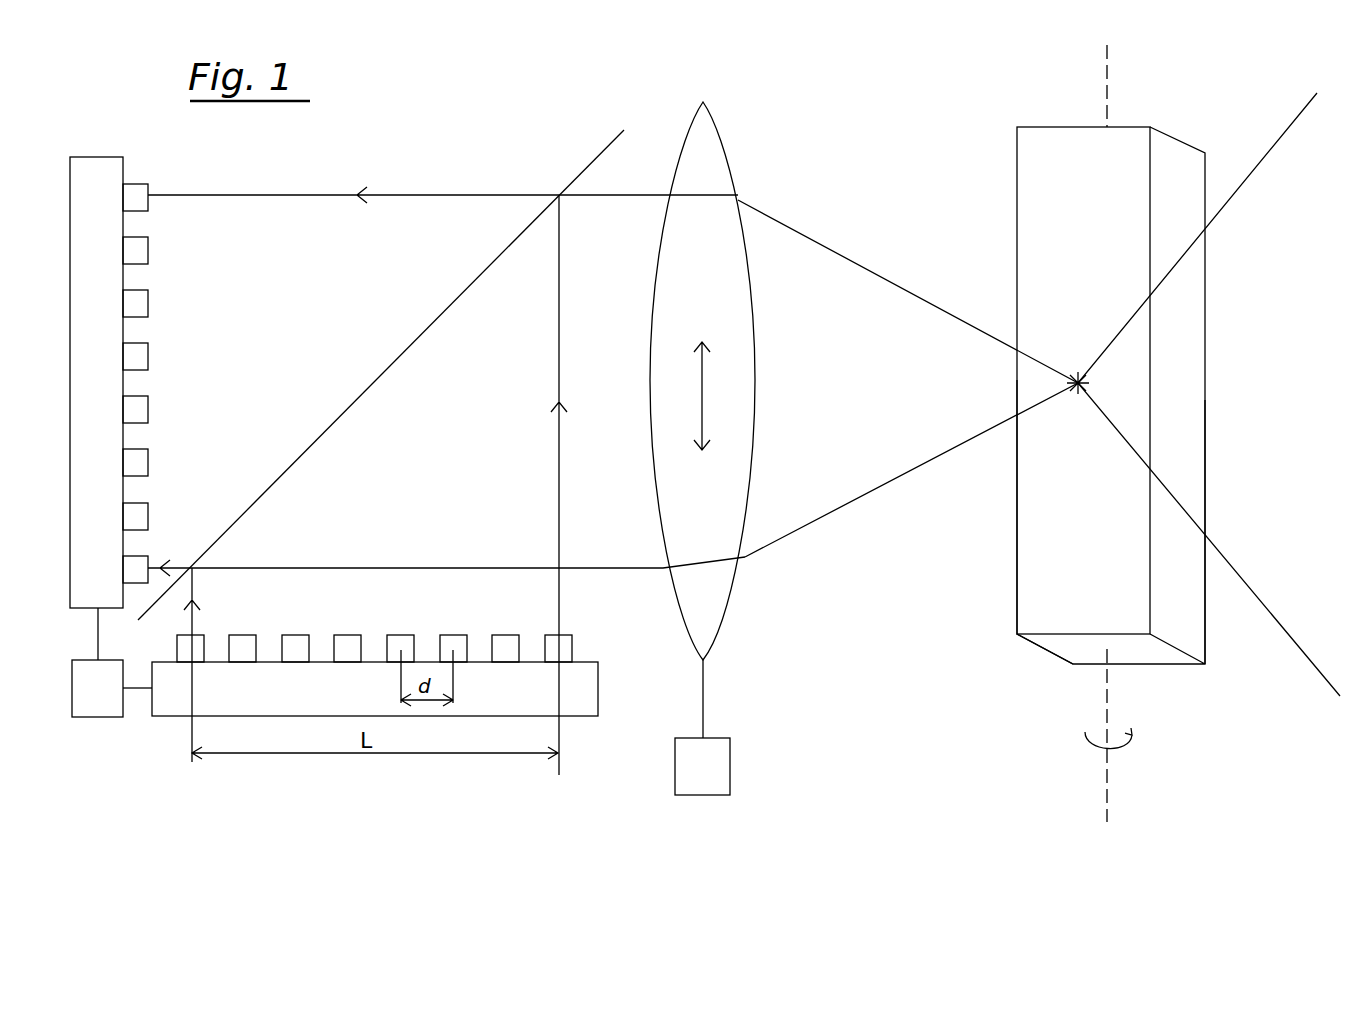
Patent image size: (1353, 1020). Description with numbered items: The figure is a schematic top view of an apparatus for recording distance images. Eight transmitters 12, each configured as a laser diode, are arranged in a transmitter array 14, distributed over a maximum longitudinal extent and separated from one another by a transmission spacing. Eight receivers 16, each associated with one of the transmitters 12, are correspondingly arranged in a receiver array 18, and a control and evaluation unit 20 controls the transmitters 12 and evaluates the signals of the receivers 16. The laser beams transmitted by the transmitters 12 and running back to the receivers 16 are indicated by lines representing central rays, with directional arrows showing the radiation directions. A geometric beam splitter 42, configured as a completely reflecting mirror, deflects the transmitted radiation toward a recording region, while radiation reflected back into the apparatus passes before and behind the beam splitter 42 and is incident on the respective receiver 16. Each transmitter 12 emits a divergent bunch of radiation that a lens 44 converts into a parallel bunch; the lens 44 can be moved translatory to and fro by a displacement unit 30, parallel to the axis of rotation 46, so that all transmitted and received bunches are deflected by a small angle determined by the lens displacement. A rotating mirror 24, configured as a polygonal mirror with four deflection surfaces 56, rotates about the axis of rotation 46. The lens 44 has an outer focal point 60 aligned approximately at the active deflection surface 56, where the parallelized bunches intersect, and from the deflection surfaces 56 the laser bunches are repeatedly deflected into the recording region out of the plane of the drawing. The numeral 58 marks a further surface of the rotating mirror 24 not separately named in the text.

The transmitter 12 is at (298, 648).
The transmitter array 14 is at (320, 705).
The receiver 16 is at (137, 300).
The receiver array 18 is at (108, 383).
The control and evaluation unit 20 is at (112, 702).
The rotating mirror 24 is at (1205, 692).
The displacement unit 30 is at (717, 782).
The geometric beam splitter 42 is at (572, 173).
The lens 44 is at (710, 145).
The axis of rotation 46 is at (1113, 795).
The deflection surface 56 is at (1040, 592).
The second mirror surface 58 is at (1196, 636).
The outer focal point 60 is at (1078, 392).